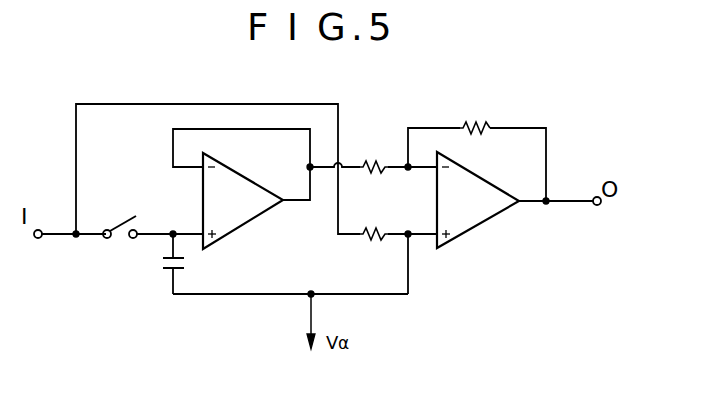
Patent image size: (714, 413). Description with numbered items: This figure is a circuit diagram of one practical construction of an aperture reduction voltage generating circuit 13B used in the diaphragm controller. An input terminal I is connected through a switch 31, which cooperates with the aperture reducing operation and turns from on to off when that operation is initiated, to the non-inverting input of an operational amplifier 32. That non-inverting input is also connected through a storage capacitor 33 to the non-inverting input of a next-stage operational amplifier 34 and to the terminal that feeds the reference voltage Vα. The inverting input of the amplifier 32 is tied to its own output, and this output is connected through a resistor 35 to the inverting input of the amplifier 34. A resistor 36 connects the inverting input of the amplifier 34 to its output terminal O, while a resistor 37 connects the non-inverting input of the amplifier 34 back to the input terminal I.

The aperture reduction voltage generating circuit 13B is at (326, 96).
The switch 31 is at (121, 225).
The operational amplifier 32 is at (243, 182).
The storage capacitor 33 is at (166, 263).
The operational amplifier 34 is at (477, 184).
The resistor 35 is at (369, 160).
The resistor 36 is at (479, 124).
The resistor 37 is at (373, 232).